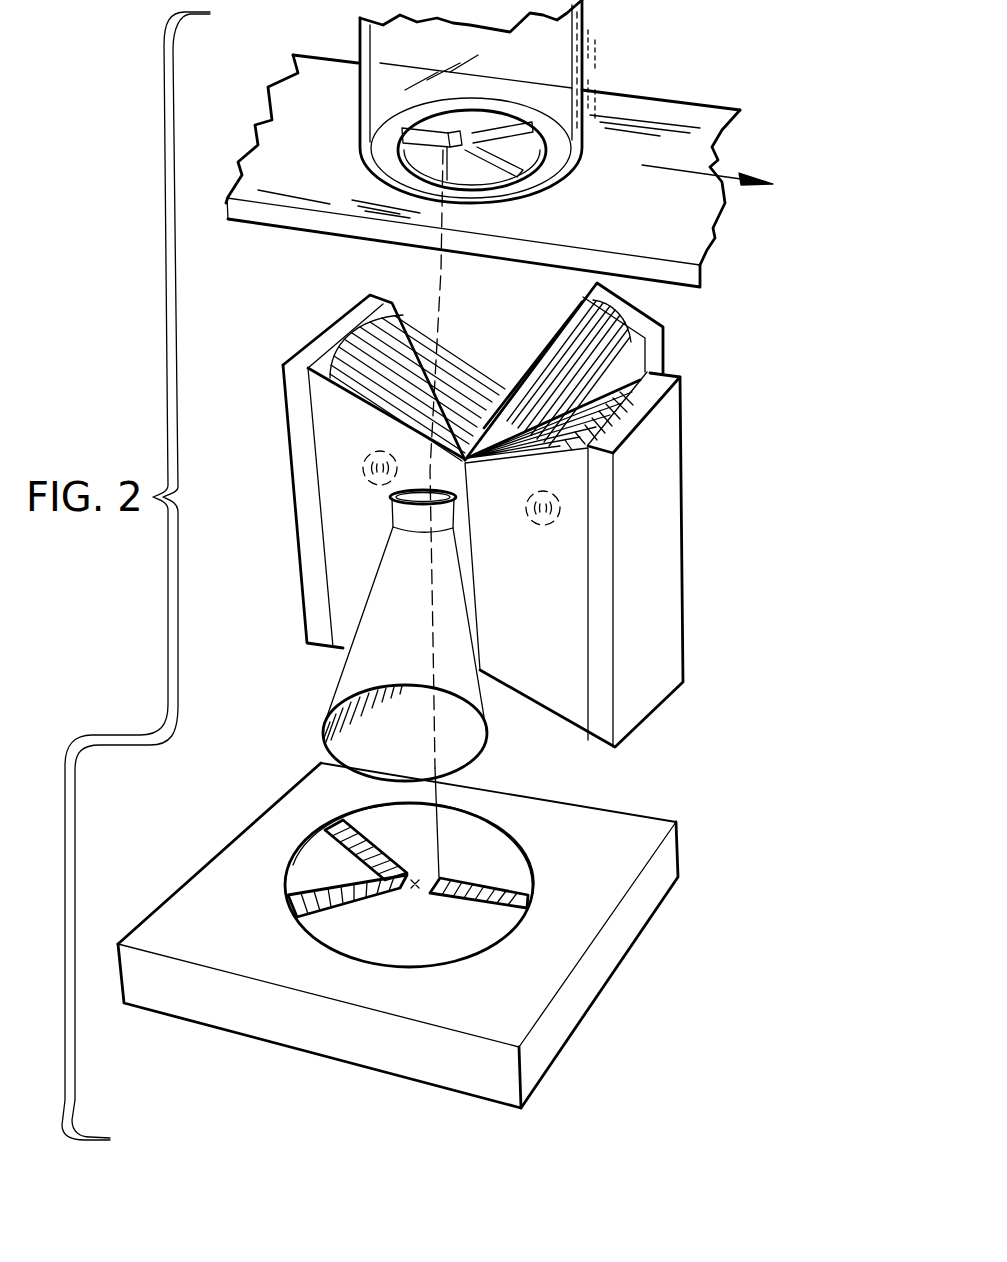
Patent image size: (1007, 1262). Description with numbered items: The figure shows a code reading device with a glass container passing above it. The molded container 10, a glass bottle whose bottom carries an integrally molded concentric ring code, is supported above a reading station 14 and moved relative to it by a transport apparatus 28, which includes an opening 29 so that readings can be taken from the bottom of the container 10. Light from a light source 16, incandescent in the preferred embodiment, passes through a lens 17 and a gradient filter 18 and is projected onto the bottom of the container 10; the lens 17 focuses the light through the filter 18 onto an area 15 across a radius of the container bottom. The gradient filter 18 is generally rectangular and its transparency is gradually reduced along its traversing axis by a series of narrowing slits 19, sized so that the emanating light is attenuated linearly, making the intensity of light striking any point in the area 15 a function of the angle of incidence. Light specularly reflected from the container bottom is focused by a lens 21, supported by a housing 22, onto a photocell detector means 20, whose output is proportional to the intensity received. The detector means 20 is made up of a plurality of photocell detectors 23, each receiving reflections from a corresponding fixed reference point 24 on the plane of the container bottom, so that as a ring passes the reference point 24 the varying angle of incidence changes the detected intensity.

The molded container 10 is at (357, 42).
The reading station 14 is at (695, 701).
The area 15 is at (422, 142).
The light source 16 is at (373, 490).
The lens 17 is at (335, 393).
The gradient filter 18 is at (413, 327).
The narrowing slits 19 is at (370, 342).
The photocell detector means 20 is at (460, 961).
The lens 21 is at (457, 505).
The housing 22 is at (330, 688).
The photocell detectors 23 is at (418, 880).
The fixed reference point 24 is at (453, 140).
The transport apparatus 28 is at (715, 232).
The opening 29 is at (508, 110).